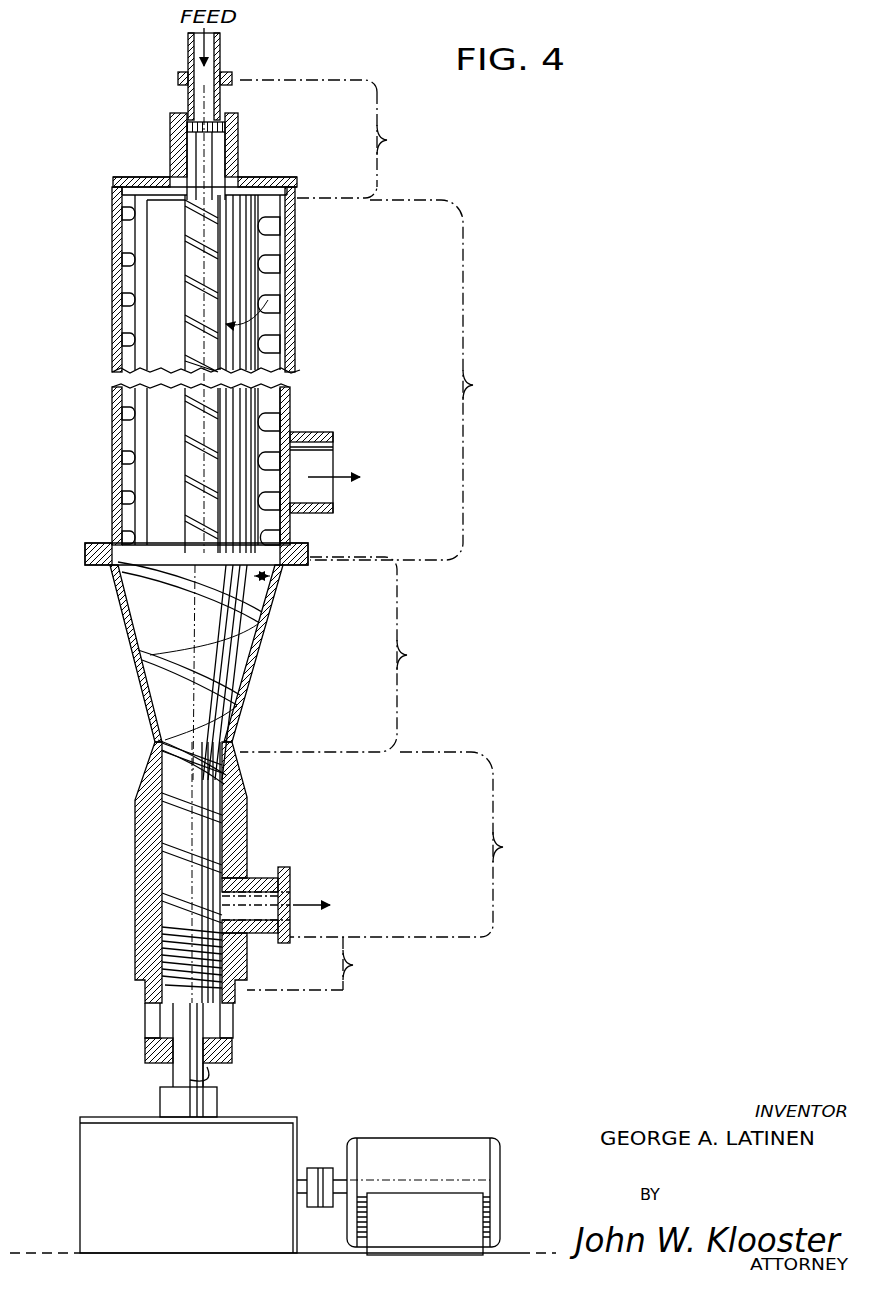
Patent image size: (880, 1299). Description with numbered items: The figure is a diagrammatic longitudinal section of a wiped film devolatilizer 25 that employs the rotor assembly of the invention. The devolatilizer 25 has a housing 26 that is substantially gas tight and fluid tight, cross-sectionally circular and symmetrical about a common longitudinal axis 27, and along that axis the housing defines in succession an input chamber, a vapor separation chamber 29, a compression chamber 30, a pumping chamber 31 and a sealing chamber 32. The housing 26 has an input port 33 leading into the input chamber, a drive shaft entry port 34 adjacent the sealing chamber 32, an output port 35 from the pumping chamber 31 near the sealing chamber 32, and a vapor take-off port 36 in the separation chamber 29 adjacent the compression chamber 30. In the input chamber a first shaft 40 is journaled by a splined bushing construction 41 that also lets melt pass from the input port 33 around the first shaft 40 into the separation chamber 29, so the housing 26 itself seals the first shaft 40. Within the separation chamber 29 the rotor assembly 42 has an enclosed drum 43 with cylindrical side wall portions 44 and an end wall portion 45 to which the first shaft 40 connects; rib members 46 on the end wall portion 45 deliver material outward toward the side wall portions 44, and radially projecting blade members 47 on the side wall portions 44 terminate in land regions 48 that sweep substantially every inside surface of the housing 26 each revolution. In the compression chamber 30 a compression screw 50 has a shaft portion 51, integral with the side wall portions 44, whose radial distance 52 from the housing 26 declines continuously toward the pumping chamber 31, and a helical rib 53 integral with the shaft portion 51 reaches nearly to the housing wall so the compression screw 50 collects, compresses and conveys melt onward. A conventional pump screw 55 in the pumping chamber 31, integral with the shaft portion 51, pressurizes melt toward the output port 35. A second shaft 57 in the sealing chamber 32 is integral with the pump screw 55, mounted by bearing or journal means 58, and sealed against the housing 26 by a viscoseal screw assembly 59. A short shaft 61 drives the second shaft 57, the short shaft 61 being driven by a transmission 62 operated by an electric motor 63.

The wiped film devolatilizer 25 is at (266, 68).
The housing 26 is at (294, 253).
The longitudinal axis 27 is at (216, 150).
The vapor separation chamber 29 is at (445, 282).
The compression chamber 30 is at (380, 598).
The pumping chamber 31 is at (472, 785).
The sealing chamber 32 is at (312, 973).
The input port 33 is at (210, 101).
The drive shaft entry port 34 is at (183, 1040).
The output port 35 is at (290, 898).
The vapor take-off port 36 is at (327, 457).
The first shaft 40 is at (193, 160).
The splined bushing construction 41 is at (185, 122).
The rotor assembly 42 is at (155, 317).
The drum 43 is at (162, 247).
The cylindrical side wall portions 44 is at (243, 355).
The end wall portion 45 is at (160, 186).
The rib members 46 is at (247, 193).
The blade members 47 is at (273, 418).
The land regions 48 is at (290, 425).
The compression screw 50 is at (220, 660).
The shaft portion 51 is at (163, 618).
The radial distance 52 is at (264, 582).
The helical rib 53 is at (247, 617).
The pump screw 55 is at (173, 822).
The second shaft 57 is at (170, 968).
The bearing or journal means 58 is at (163, 1050).
The viscoseal screw assembly 59 is at (178, 928).
The short shaft 61 is at (183, 1081).
The transmission 62 is at (252, 1137).
The electric motor 63 is at (467, 1145).